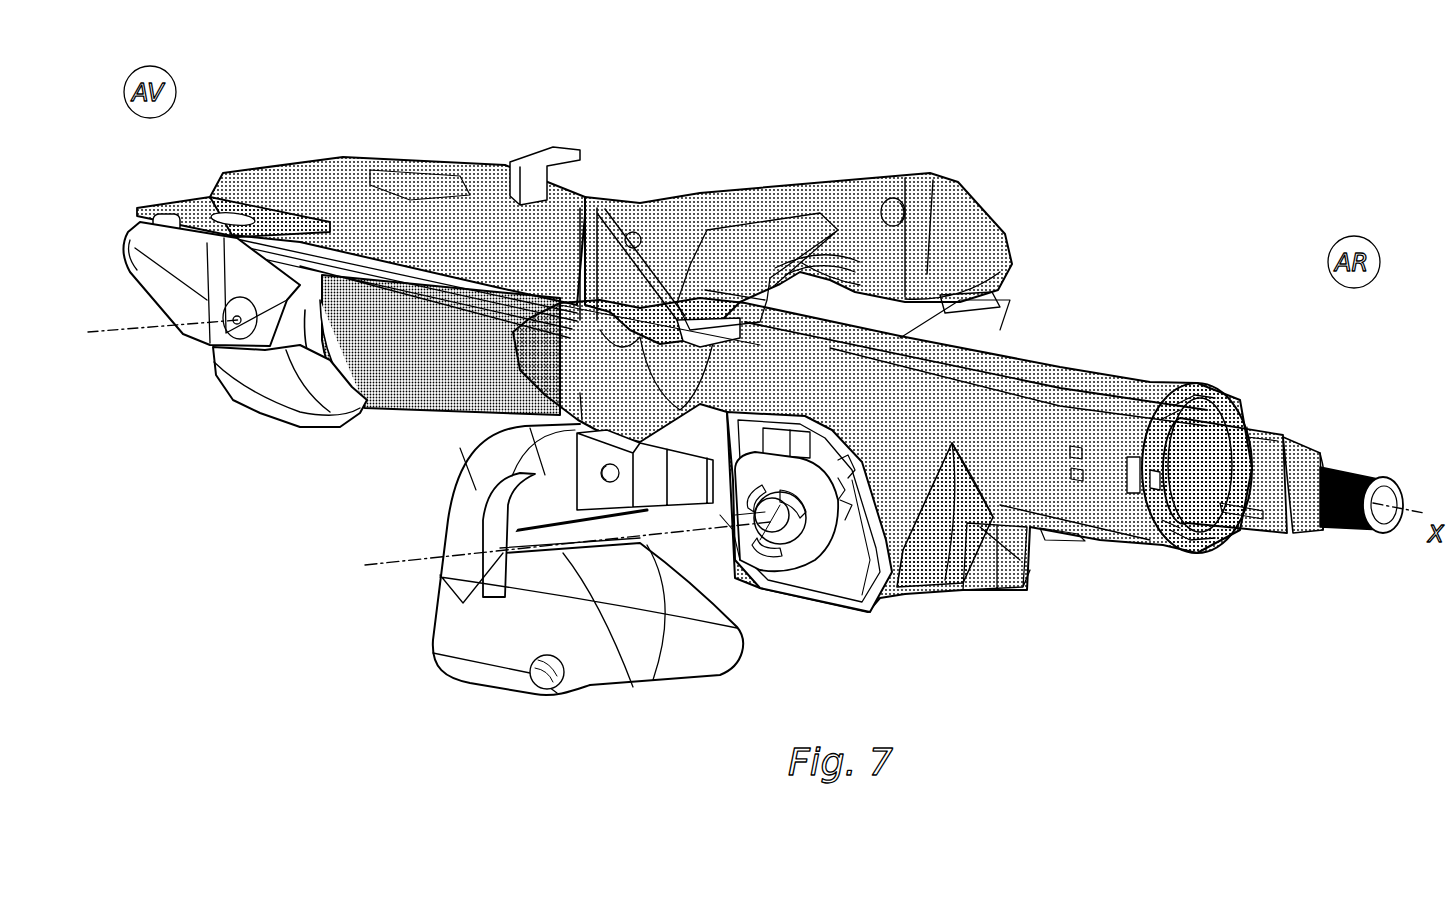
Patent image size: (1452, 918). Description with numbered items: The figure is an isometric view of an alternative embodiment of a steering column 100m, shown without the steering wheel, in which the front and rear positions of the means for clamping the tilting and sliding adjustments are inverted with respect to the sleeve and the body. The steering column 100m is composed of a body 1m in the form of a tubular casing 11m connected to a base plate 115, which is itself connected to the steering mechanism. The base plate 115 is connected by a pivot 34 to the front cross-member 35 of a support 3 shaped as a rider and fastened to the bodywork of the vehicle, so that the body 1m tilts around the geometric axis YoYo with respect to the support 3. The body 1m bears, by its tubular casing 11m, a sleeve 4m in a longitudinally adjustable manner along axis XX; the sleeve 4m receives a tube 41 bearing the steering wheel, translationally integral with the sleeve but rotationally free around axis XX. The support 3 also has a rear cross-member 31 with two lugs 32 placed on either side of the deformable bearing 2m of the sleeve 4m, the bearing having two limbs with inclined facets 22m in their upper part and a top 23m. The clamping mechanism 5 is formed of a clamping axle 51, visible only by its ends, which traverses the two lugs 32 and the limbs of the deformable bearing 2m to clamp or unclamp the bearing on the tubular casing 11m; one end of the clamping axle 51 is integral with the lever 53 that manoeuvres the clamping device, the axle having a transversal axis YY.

The steering column 100m is at (1174, 243).
The body 1m is at (322, 375).
The tubular casing 11m is at (431, 385).
The base plate 115 is at (309, 490).
The deformable bearing 2m is at (931, 560).
The inclined facets 22m is at (1059, 392).
The top 23m is at (1018, 273).
The support 3 is at (832, 236).
The rear cross-member 31 is at (903, 176).
The lugs 32 is at (1000, 328).
The pivot 34 is at (234, 324).
The front cross-member 35 is at (325, 176).
The sleeve 4m is at (1153, 365).
The tube 41 is at (1227, 442).
The clamping mechanism 5 is at (628, 553).
The clamping axle 51 is at (768, 550).
The lever 53 is at (441, 590).